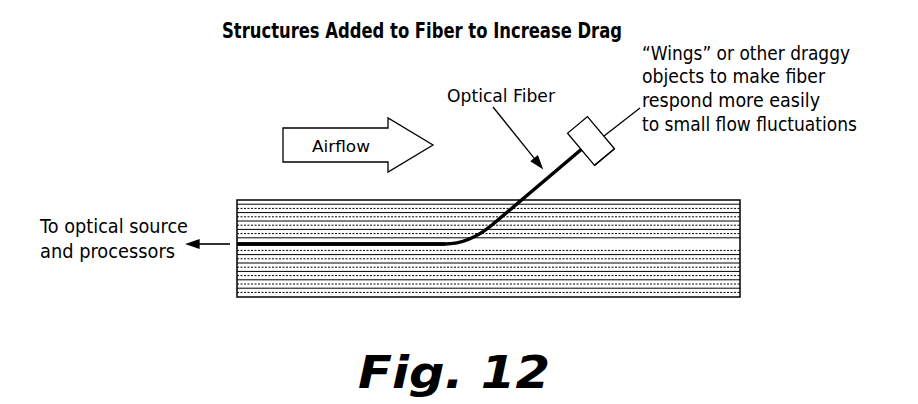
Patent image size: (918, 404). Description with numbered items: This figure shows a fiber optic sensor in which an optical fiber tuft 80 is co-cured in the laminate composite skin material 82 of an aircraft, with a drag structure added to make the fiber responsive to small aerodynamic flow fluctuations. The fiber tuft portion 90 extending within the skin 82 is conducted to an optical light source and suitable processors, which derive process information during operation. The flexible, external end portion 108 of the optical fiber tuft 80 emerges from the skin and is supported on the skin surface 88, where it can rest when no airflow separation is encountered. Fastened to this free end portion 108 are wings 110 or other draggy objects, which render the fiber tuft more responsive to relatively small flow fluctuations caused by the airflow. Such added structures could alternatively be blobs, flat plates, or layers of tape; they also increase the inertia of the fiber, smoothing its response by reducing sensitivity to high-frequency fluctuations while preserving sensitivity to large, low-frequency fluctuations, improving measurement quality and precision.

The optical fiber tuft 80 is at (538, 187).
The laminate composite skin material 82 is at (645, 257).
The skin surface 88 is at (714, 201).
The fiber tuft portion 90 is at (288, 247).
The external flexible end portion 108 is at (593, 122).
The wings 110 is at (607, 155).